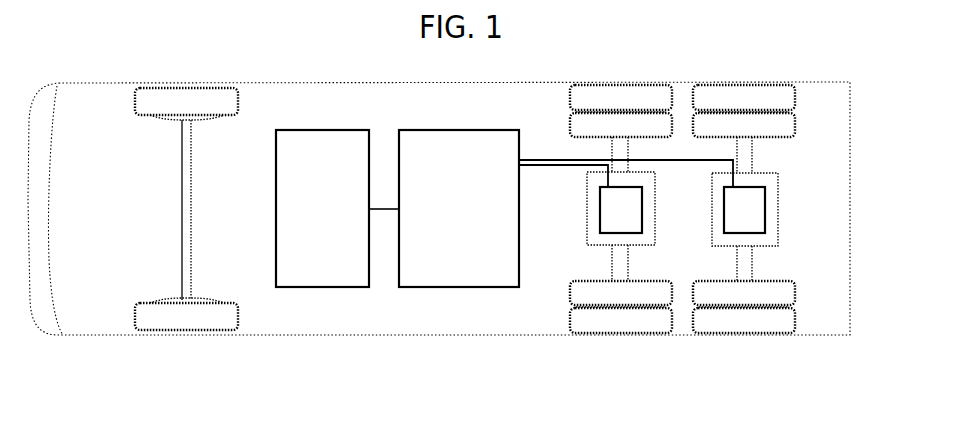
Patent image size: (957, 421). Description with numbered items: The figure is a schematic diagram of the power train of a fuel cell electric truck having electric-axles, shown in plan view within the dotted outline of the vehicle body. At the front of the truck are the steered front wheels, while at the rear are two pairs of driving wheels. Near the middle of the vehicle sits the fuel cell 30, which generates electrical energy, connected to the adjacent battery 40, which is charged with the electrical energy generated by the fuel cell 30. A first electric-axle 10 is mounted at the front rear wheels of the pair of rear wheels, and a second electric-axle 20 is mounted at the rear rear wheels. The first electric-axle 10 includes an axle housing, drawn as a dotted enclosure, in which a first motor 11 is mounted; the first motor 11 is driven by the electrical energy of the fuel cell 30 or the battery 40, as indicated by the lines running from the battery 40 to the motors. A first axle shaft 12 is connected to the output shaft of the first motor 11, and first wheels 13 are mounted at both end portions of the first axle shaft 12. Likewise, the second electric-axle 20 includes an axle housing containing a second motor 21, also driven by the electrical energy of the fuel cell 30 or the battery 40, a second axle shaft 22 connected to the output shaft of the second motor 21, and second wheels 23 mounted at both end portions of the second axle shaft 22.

The first electric-axle 10 is at (608, 241).
The first motor 11 is at (587, 245).
The first axle shaft 12 is at (620, 263).
The first wheels 13 is at (621, 320).
The second electric-axle 20 is at (797, 241).
The second motor 21 is at (765, 193).
The second axle shaft 22 is at (745, 263).
The second wheels 23 is at (745, 320).
The fuel cell 30 is at (322, 288).
The battery 40 is at (455, 288).